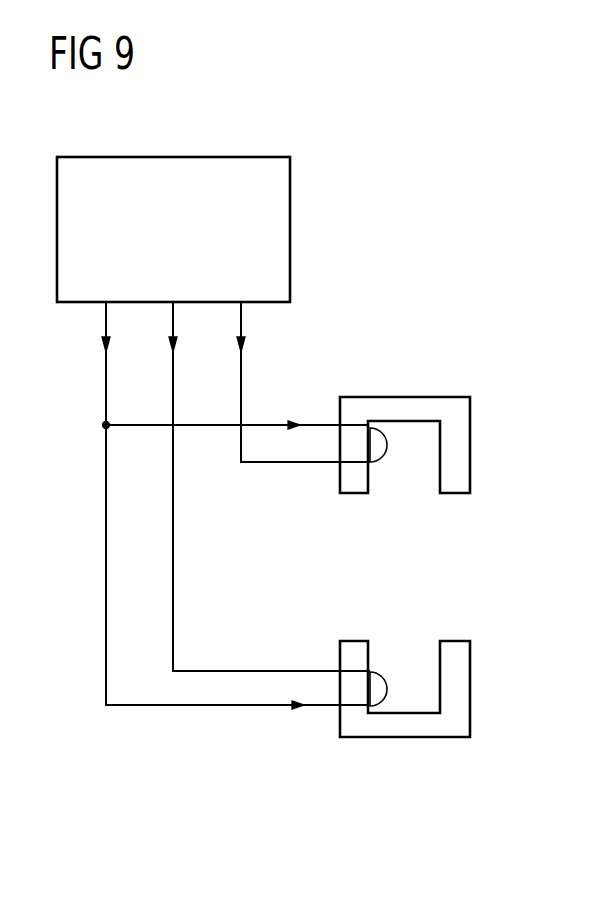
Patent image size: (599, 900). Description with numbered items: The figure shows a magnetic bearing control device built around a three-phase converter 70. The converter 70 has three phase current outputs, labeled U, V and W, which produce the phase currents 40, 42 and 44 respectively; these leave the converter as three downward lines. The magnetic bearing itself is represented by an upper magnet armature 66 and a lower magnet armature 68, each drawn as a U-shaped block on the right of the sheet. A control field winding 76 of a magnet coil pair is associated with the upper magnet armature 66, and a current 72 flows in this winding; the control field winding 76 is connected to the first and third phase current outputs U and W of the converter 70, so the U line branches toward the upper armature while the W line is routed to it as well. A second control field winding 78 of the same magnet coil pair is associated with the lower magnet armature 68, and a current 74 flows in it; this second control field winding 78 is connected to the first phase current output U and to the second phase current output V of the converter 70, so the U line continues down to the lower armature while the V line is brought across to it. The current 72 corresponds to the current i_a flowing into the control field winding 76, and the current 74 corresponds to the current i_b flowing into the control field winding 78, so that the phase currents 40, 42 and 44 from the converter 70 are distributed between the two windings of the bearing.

The three-phase converter 70 is at (245, 157).
The phase current 40 is at (106, 324).
The phase current 42 is at (173, 323).
The phase current 44 is at (241, 323).
The current 72 is at (316, 424).
The current 74 is at (320, 711).
The upper magnet armature 66 is at (472, 432).
The lower magnet armature 68 is at (472, 700).
The control field winding 76 is at (382, 467).
The second control field winding 78 is at (382, 670).